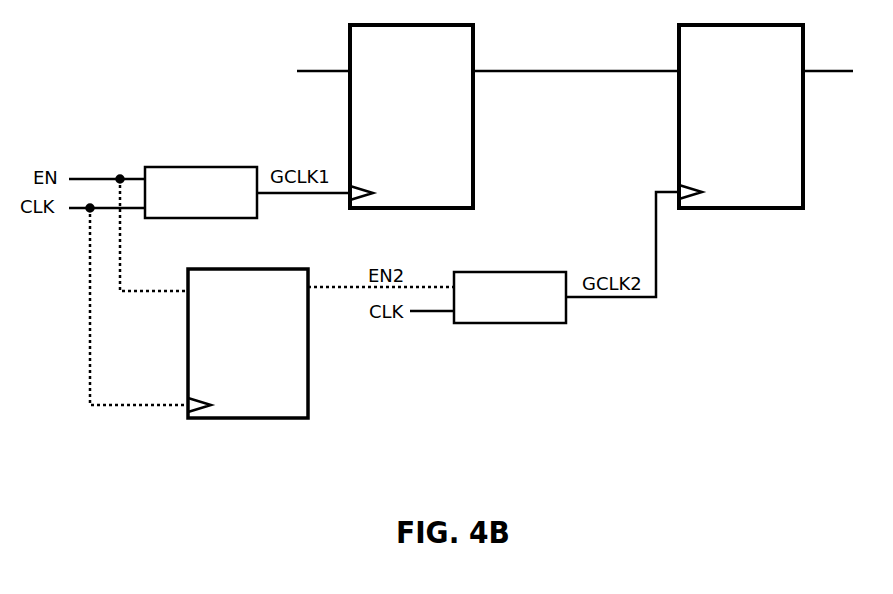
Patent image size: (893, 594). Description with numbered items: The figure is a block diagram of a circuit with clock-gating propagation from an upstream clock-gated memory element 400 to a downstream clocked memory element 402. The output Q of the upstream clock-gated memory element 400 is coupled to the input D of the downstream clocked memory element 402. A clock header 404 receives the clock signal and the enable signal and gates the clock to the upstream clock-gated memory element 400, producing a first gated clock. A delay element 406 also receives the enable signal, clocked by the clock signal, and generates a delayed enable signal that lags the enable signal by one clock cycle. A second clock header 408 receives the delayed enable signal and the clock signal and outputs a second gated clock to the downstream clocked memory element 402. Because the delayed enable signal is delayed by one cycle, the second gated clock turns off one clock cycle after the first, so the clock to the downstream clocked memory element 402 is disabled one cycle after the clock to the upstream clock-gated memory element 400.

The upstream clock-gated memory element 400 is at (411, 116).
The downstream clocked memory element 402 is at (741, 116).
The clock header 404 is at (201, 192).
The delay element 406 is at (248, 343).
The clock header 408 is at (510, 297).